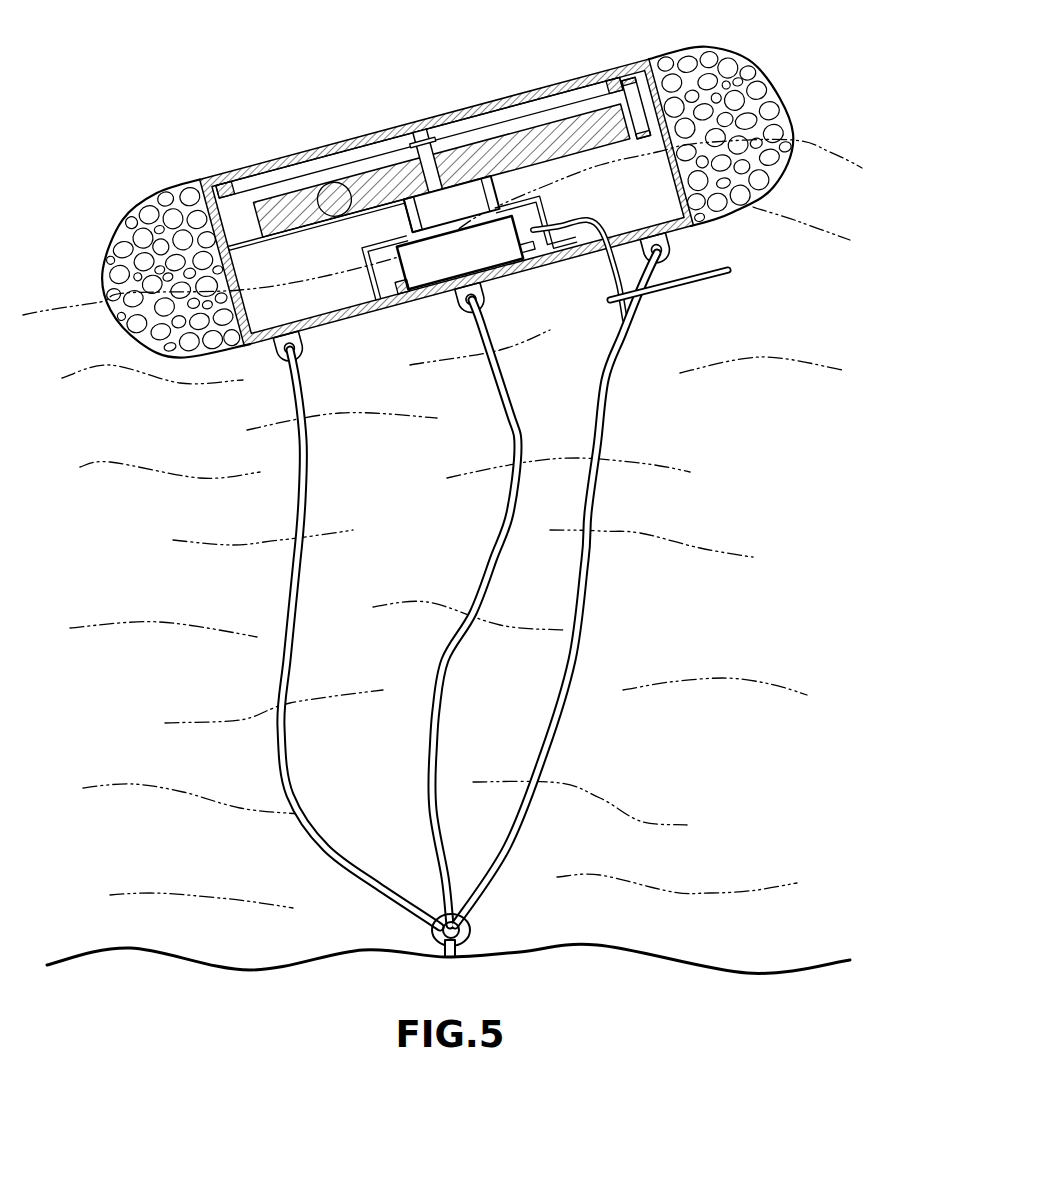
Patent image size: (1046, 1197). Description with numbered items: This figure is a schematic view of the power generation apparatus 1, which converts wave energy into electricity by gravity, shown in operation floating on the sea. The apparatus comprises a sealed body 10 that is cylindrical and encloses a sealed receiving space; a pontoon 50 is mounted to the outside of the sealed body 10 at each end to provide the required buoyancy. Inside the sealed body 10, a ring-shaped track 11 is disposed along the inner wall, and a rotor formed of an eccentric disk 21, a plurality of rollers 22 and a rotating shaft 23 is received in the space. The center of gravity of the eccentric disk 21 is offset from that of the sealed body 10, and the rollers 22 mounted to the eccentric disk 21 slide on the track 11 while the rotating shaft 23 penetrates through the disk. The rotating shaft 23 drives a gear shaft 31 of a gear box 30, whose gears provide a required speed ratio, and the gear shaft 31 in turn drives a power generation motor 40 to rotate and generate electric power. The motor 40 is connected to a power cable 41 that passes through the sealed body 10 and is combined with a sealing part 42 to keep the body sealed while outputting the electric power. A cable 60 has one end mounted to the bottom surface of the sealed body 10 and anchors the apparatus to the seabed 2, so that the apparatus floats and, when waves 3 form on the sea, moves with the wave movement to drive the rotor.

The power generation apparatus 1 is at (451, 201).
The seabed 2 is at (640, 947).
The waves 3 is at (817, 153).
The sealed body 10 is at (300, 150).
The track 11 is at (178, 190).
The eccentric disk 21 is at (508, 133).
The rollers 22 is at (653, 97).
The rotating shaft 23 is at (420, 130).
The gear box 30 is at (500, 180).
The gear shaft 31 is at (400, 208).
The power generation motor 40 is at (417, 263).
The power cable 41 is at (690, 285).
The sealing part 42 is at (602, 258).
The pontoon 50 is at (717, 63).
The cable 60 is at (605, 410).